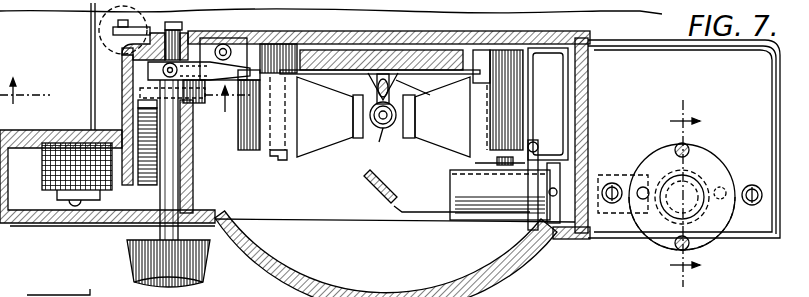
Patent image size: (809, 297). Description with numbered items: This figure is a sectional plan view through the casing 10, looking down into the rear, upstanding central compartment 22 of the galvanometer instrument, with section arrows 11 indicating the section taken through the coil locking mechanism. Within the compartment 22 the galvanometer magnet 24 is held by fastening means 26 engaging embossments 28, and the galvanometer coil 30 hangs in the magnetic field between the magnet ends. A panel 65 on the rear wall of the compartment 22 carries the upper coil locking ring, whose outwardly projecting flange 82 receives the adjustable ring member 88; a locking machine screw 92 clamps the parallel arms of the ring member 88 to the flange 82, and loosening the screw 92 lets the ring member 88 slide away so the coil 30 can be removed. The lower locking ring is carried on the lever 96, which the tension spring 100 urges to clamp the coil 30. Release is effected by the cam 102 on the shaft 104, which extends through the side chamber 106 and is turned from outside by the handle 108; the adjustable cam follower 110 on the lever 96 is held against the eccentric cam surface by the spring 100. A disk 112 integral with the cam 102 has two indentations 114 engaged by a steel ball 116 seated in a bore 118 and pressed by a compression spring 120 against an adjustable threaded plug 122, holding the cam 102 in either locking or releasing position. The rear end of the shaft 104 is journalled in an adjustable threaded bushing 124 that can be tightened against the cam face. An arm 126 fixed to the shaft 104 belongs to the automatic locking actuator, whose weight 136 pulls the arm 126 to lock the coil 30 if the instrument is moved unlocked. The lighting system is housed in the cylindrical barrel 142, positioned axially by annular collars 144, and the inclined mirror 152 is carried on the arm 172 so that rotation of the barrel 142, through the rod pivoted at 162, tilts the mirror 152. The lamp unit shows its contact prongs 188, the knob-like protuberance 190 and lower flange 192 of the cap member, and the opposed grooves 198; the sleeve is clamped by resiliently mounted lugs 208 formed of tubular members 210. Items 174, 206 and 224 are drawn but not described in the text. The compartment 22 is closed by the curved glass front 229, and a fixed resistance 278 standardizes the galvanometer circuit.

The casing 10 is at (674, 194).
The section line 11 is at (125, 105).
The central compartment 22 is at (543, 53).
The galvanometer magnet 24 is at (326, 135).
The fastening means 26 is at (473, 165).
The embossments 28 is at (277, 57).
The galvanometer coil 30 is at (384, 146).
The panel 65 is at (316, 50).
The outwardly projecting flange 82 is at (405, 82).
The adjustable ring member 88 is at (396, 126).
The locking machine screw 92 is at (383, 74).
The lever 96 is at (297, 74).
The tension spring 100 is at (223, 44).
The cam 102 is at (148, 66).
The shaft 104 is at (170, 198).
The side chamber 106 is at (40, 198).
The handle 108 is at (133, 258).
The adjustable cam follower 110 is at (148, 72).
The disk 112 is at (195, 103).
The indentations 114 is at (140, 93).
The steel ball 116 is at (140, 104).
The bore 118 is at (122, 123).
The compression spring 120 is at (157, 147).
The adjustable threaded plug 122 is at (160, 173).
The adjustable threaded bushing 124 is at (172, 22).
The arm 126 is at (94, 12).
The weight 136 is at (100, 30).
The cylindrical barrel 142 is at (489, 200).
The annular collars 144 is at (557, 240).
The inclined mirror 152 is at (376, 193).
The pivot 162 is at (545, 142).
The arm 172 is at (414, 213).
The housing 174 is at (608, 52).
The contact prongs 188 is at (683, 141).
The protuberance 190 is at (697, 192).
The lower flange 192 is at (662, 170).
The grooves 198 is at (690, 147).
The pin 206 is at (705, 249).
The resiliently mounted lugs 208 is at (675, 150).
The cylindrical tubular members 210 is at (654, 247).
The screw 224 is at (611, 183).
The curved glass front 229 is at (376, 296).
The fixed resistance 278 is at (89, 177).